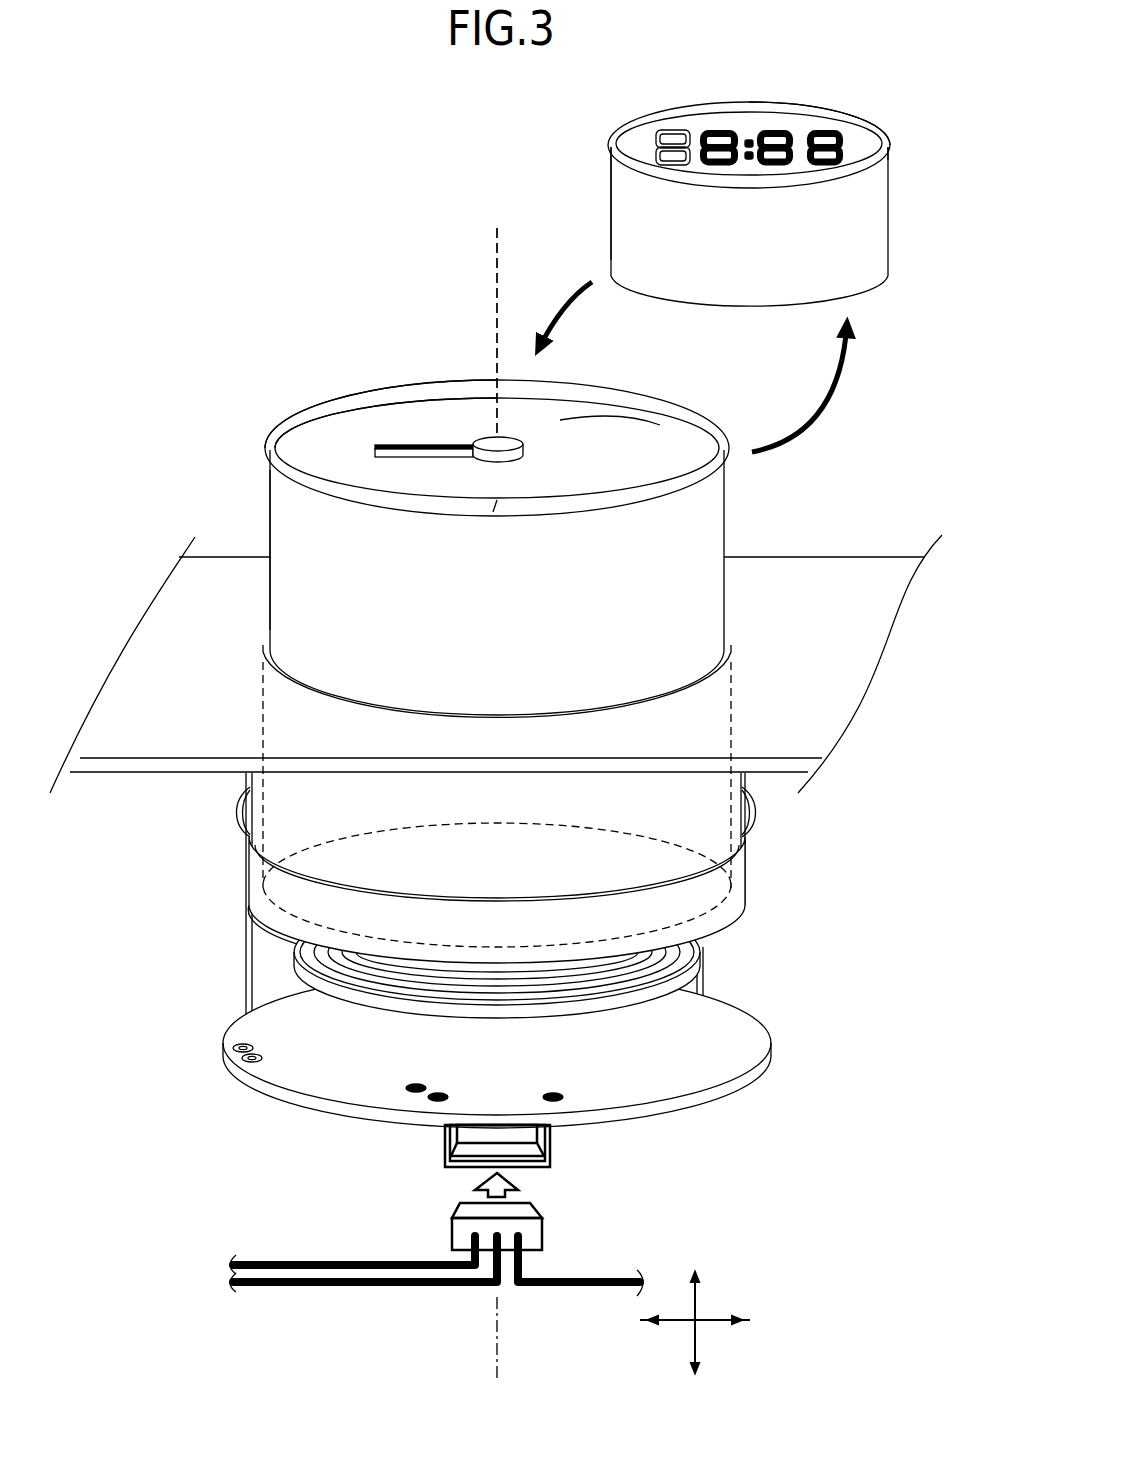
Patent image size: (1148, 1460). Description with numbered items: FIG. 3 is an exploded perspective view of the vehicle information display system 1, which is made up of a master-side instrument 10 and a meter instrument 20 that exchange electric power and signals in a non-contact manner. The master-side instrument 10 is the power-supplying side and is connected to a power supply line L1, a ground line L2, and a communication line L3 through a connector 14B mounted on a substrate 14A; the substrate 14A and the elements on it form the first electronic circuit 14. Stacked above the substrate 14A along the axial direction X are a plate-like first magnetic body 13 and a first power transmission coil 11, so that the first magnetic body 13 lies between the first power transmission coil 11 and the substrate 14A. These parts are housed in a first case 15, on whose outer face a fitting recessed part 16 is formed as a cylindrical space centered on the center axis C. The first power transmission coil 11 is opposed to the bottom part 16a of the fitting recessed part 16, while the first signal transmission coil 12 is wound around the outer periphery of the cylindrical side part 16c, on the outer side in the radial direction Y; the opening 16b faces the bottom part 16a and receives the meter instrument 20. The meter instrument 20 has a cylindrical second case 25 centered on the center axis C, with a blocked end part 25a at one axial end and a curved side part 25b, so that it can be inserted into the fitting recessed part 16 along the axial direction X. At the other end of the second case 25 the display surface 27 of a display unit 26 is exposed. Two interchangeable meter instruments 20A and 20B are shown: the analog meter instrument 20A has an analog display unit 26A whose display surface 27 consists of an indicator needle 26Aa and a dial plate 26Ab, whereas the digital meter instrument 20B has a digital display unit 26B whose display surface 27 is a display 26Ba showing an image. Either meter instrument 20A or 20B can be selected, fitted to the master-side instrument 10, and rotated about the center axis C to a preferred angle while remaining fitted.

The vehicle information display system 1 is at (84, 850).
The master-side instrument 10 is at (174, 930).
The first power transmission coil 11 is at (677, 967).
The first signal transmission coil 12 is at (750, 827).
The first magnetic body 13 is at (663, 997).
The first electronic circuit 14 is at (546, 1110).
The substrate 14A is at (683, 1072).
The connector 14B is at (455, 1205).
The first case 15 is at (813, 718).
The fitting recessed part 16 is at (267, 653).
The bottom part 16a is at (273, 922).
The opening 16b is at (722, 638).
The side part 16c is at (277, 785).
The meter instrument 20 is at (525, 711).
The meter instrument (analog meter) 20A is at (492, 515).
The meter instrument (digital meter) 20B is at (592, 128).
The second case 25 is at (703, 524).
The end part 25a is at (270, 674).
The side part 25b is at (293, 502).
The display unit 26 is at (520, 253).
The analog display unit 26A is at (345, 378).
The indicator needle 26Aa is at (430, 443).
The dial plate 26Ab is at (335, 452).
The digital display unit 26B is at (810, 101).
The display (LCD) 26Ba is at (646, 140).
The display surface 27 is at (630, 144).
The center axis C is at (497, 254).
The power supply line L1 is at (333, 1258).
The ground (GND) line L2 is at (333, 1288).
The communication line L3 is at (600, 1278).
The axial direction X is at (698, 1295).
The radial direction Y is at (718, 1323).